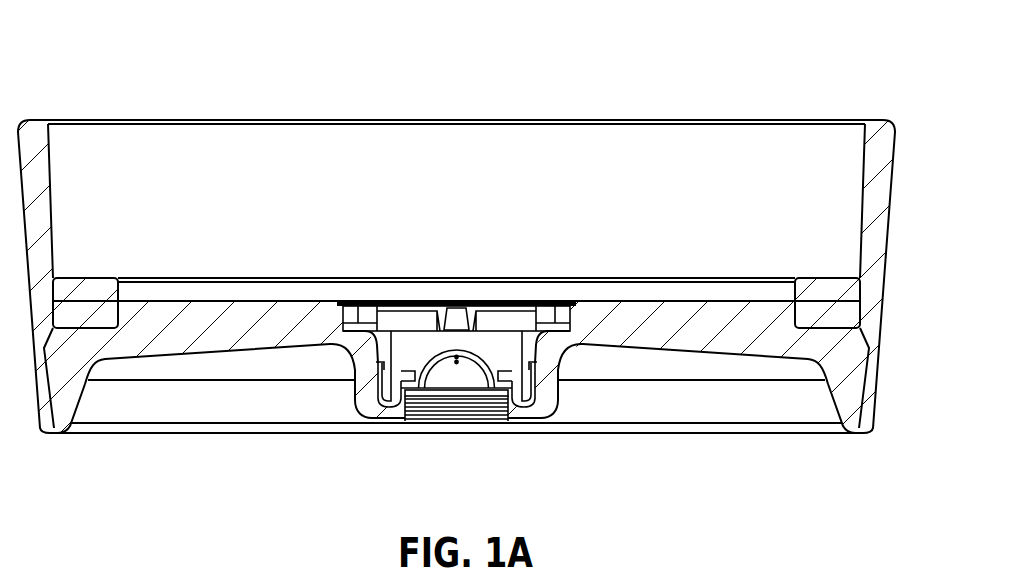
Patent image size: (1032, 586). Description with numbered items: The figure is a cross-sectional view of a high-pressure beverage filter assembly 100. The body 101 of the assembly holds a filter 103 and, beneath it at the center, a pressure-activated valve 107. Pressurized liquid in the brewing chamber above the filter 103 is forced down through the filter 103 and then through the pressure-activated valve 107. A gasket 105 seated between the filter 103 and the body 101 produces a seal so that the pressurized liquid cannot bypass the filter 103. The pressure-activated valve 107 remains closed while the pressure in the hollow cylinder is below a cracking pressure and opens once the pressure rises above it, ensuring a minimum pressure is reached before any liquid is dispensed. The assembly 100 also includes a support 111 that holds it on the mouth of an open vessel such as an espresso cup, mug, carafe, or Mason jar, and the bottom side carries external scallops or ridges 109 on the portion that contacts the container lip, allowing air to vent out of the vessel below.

The high-pressure beverage filter assembly 100 is at (862, 45).
The body 101 is at (882, 132).
The filter 103 is at (352, 288).
The gasket 105 is at (79, 290).
The pressure-activated valve 107 is at (452, 429).
The external scallops or ridges 109 is at (211, 407).
The support 111 is at (851, 404).